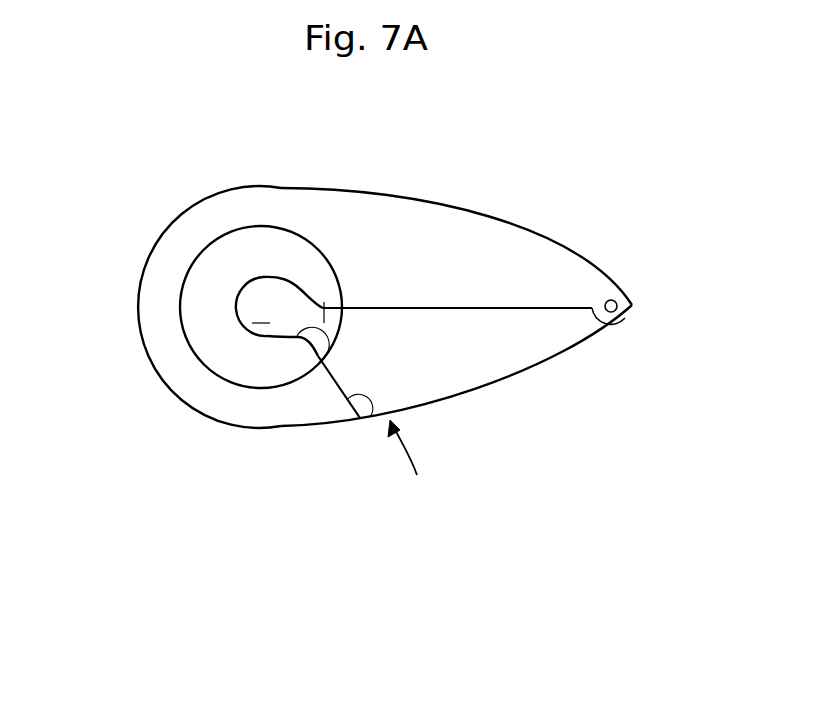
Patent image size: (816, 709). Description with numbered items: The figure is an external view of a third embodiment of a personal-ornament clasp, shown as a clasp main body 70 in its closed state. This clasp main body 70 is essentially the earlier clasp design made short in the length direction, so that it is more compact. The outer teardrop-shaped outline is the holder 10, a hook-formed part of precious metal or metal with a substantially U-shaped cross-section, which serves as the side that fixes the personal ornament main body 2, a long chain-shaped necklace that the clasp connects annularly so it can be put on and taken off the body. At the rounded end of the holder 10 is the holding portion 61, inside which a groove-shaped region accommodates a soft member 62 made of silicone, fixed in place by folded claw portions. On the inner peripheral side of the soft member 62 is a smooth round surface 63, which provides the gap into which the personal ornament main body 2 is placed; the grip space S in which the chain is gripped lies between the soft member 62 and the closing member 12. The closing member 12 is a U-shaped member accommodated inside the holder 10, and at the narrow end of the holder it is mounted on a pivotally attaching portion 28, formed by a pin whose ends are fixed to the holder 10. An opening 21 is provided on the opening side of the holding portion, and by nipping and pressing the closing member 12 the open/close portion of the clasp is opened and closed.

The clasp main body 70 is at (385, 283).
The holder 10 is at (428, 225).
The closing member 12 is at (450, 370).
The personal ornament main body 2 is at (324, 300).
The holding portion 61 is at (259, 277).
The soft member 62 is at (210, 287).
The round surface 63 is at (320, 336).
The opening 21 is at (370, 418).
The pivotally attaching portion 28 is at (620, 307).